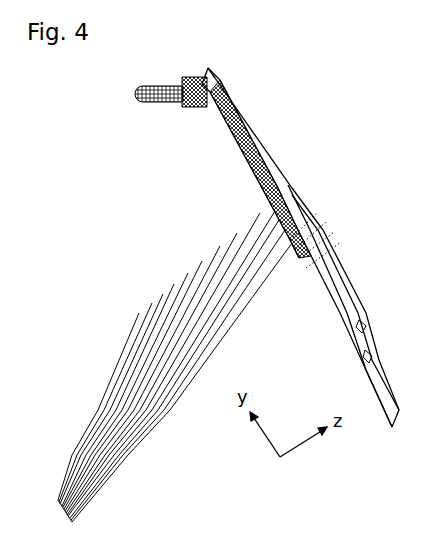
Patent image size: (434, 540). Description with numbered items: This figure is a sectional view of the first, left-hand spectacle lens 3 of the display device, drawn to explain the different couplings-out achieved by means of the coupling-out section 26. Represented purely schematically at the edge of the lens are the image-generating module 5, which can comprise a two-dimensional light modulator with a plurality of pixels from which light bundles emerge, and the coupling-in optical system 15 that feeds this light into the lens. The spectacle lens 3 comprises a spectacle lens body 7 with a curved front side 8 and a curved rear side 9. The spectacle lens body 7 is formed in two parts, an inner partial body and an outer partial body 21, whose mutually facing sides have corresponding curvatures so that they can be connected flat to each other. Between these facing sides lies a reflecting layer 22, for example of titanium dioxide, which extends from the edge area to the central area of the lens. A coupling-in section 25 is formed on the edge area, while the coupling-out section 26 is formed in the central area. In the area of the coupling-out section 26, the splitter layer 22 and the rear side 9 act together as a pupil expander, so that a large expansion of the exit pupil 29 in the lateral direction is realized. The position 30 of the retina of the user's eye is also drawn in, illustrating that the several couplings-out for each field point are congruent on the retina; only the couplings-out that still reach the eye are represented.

The first spectacle lens 3 is at (262, 187).
The image-generating module 5 is at (133, 94).
The spectacle lens body 7 is at (215, 74).
The curved front side 8 is at (233, 97).
The curved rear side 9 is at (248, 162).
The coupling-in optical system 15 is at (186, 107).
The outer partial body 21 is at (272, 157).
The reflecting layer 22 is at (242, 130).
The coupling-in section 25 is at (221, 93).
The coupling-out section 26 is at (323, 238).
The exit pupil 29 is at (167, 349).
The position of the retina 30 is at (68, 506).